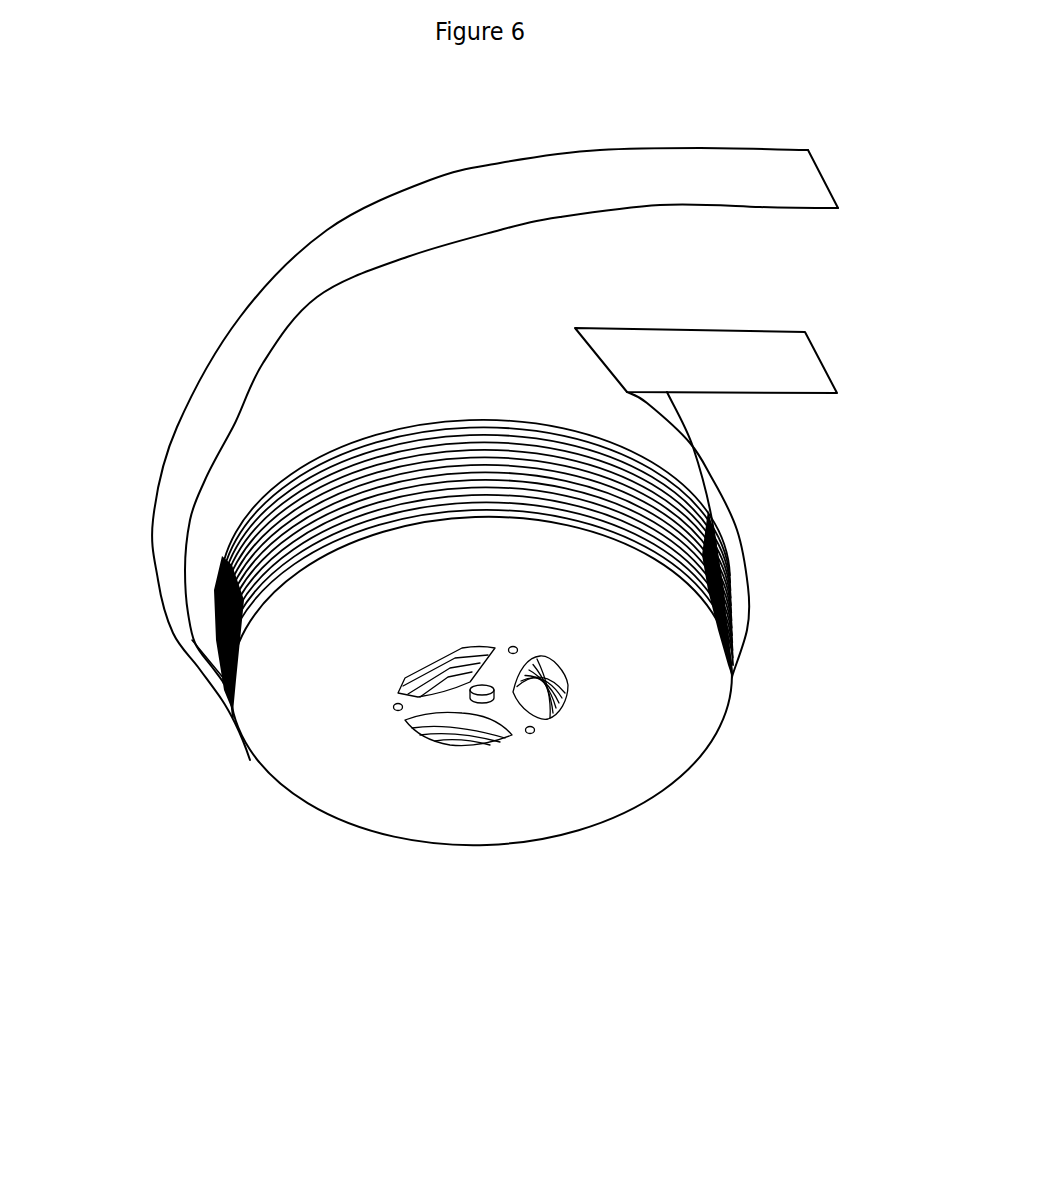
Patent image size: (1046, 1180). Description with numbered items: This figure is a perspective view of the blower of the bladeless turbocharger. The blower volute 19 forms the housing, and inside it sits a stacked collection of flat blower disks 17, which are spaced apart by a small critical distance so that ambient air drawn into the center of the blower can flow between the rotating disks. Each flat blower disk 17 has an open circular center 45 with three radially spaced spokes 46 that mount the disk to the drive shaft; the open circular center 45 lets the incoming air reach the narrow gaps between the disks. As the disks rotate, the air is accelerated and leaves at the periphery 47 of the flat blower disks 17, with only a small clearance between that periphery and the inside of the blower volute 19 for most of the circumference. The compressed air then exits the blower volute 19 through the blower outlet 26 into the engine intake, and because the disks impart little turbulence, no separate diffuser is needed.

The flat blower disks 17 is at (243, 558).
The blower volute 19 is at (748, 590).
The blower outlet 26 is at (743, 267).
The open circular center 45 is at (418, 688).
The radially spaced spokes 46 is at (509, 721).
The periphery 47 is at (637, 810).